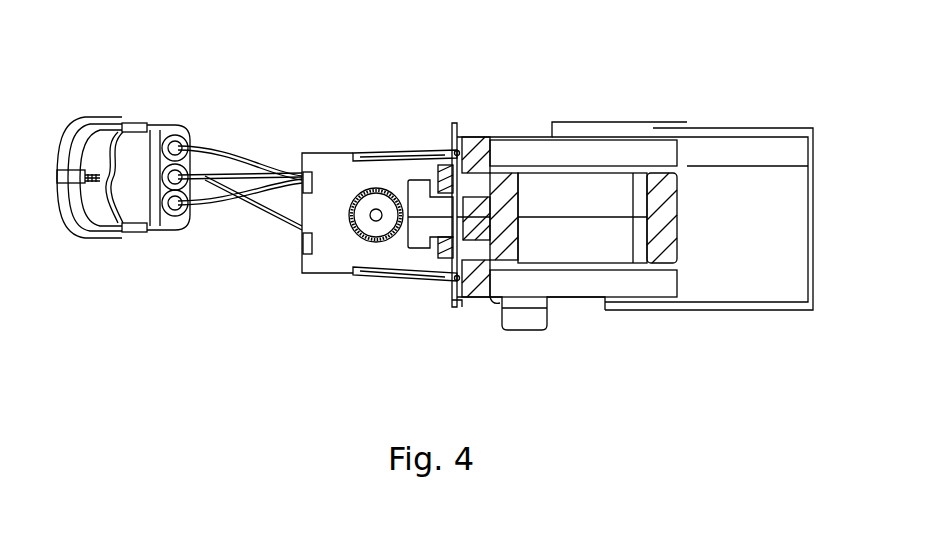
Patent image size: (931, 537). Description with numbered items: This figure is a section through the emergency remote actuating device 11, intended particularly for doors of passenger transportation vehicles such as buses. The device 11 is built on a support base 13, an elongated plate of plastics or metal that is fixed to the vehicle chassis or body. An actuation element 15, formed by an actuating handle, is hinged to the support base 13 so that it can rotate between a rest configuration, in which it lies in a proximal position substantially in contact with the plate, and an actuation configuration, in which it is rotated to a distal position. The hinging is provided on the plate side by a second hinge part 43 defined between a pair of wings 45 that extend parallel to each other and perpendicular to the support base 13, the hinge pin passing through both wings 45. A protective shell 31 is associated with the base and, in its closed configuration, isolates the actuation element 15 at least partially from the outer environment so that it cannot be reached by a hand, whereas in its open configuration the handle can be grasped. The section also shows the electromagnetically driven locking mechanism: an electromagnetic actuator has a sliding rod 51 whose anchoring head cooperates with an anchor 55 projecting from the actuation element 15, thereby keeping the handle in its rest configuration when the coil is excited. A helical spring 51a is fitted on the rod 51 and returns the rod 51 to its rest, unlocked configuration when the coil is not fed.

The emergency remote actuating device 11 is at (508, 95).
The support base 13 is at (444, 288).
The actuation element 15 is at (691, 226).
The protective shell 31 is at (790, 124).
The second hinge part 43 is at (694, 177).
The wings 45 is at (617, 140).
The sliding rod 51 is at (325, 275).
The helical spring 51a is at (352, 190).
The anchor 55 is at (404, 166).